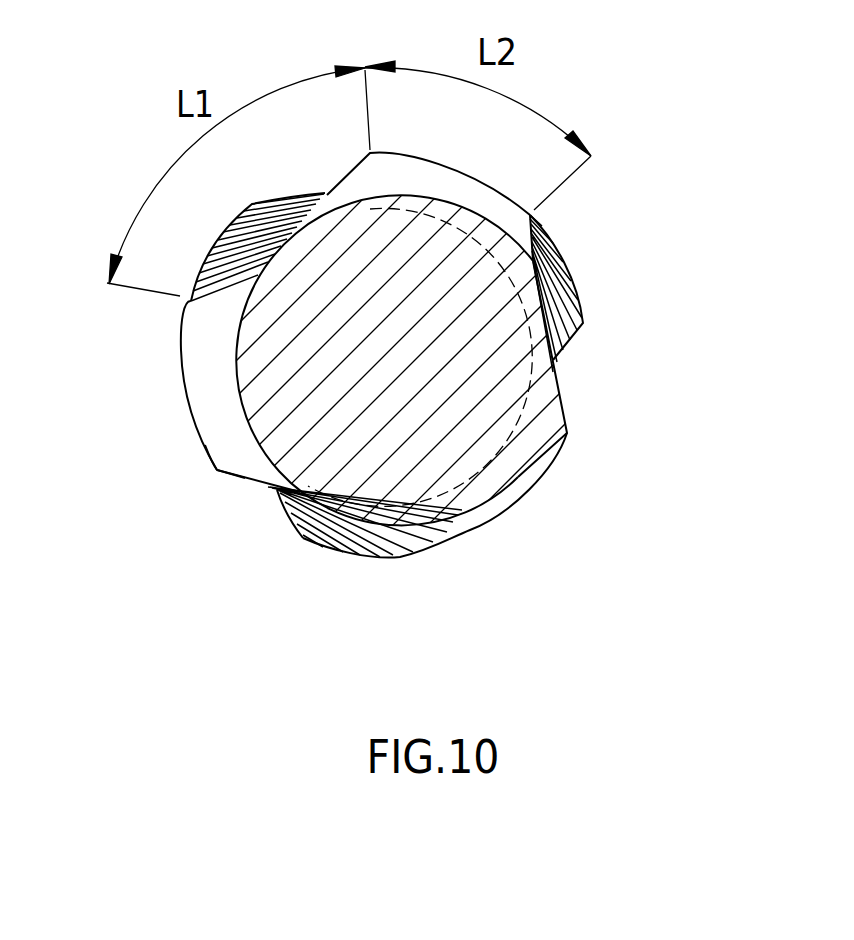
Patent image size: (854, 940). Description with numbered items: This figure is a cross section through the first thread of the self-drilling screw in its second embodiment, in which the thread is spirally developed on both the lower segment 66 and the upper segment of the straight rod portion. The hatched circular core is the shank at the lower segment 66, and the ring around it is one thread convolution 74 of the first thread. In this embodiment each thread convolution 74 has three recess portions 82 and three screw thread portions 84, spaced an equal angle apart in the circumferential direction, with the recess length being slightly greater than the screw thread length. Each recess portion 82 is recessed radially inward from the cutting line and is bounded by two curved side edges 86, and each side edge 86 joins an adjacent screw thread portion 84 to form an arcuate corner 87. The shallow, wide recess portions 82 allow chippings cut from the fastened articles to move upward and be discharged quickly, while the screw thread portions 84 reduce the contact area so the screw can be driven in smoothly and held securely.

The lower segment 66 is at (502, 363).
The thread convolution 74 is at (496, 504).
The recess portion 82 is at (562, 407).
The screw thread portion 84 is at (198, 373).
The curved side edge 86 is at (197, 290).
The arcuate corner 87 is at (216, 474).